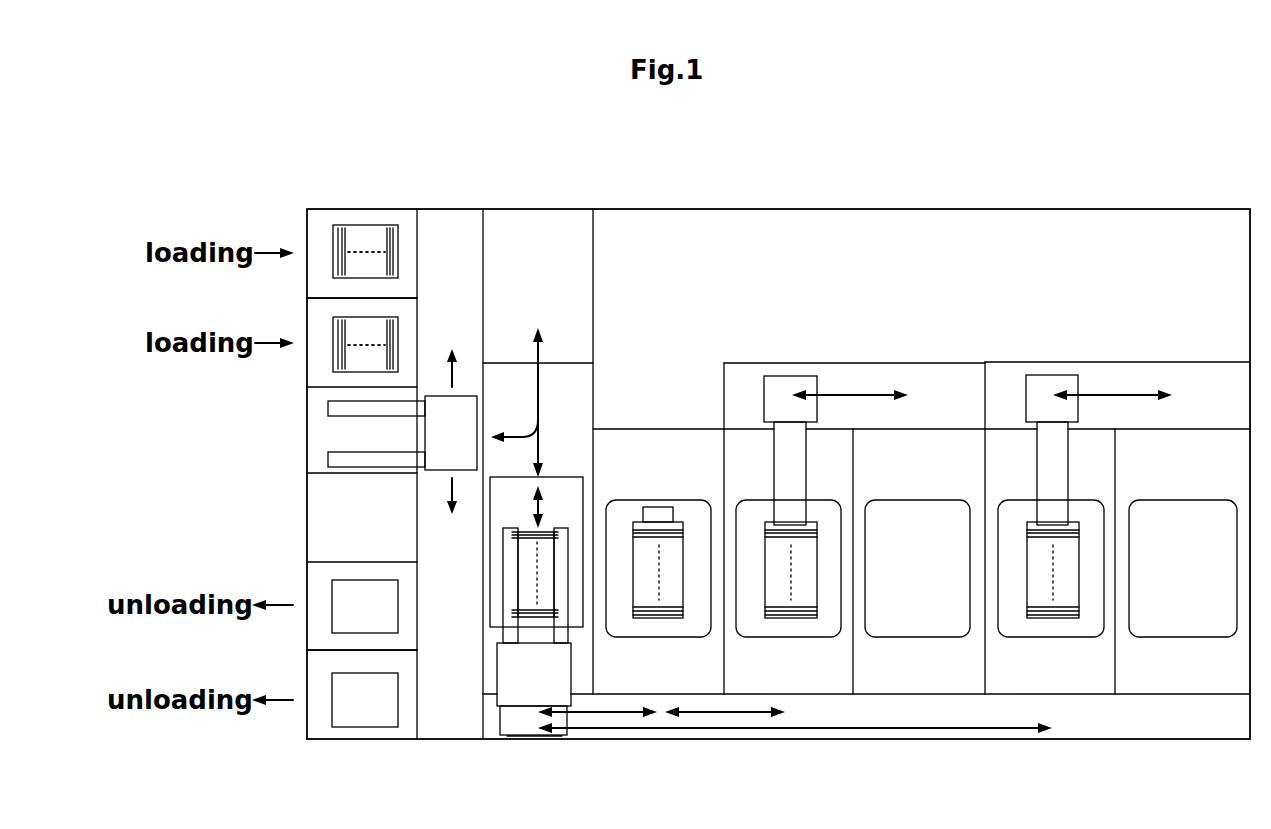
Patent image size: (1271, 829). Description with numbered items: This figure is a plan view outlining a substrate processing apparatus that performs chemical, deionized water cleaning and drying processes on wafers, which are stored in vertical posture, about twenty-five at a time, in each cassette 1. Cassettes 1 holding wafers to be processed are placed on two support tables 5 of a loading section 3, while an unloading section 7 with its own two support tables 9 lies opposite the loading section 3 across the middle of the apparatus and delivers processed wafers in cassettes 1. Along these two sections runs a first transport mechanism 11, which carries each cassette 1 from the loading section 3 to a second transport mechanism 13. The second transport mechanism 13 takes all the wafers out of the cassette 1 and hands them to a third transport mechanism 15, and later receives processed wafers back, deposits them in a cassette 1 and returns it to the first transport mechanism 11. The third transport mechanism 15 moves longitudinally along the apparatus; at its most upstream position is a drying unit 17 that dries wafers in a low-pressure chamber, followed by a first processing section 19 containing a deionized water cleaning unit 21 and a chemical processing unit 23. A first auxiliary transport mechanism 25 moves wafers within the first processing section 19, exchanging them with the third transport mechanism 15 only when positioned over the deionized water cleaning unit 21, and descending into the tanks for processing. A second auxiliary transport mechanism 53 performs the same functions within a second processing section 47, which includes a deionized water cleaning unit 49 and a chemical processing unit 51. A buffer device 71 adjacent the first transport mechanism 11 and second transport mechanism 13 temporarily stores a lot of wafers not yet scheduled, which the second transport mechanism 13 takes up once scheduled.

The cassette 1 is at (400, 268).
The loading section 3 is at (292, 368).
The support table 5 is at (313, 283).
The unloading section 7 is at (289, 747).
The support table 9 is at (312, 680).
The first transport mechanism 11 is at (392, 434).
The second transport mechanism 13 is at (562, 476).
The third transport mechanism 15 is at (553, 738).
The drying unit 17 is at (714, 462).
The first processing section 19 is at (912, 352).
The deionized water cleaning unit 21 is at (847, 462).
The chemical processing unit 23 is at (974, 462).
The first auxiliary transport mechanism 25 is at (782, 376).
The second processing section 47 is at (1160, 352).
The deionized water cleaning unit 49 is at (1109, 462).
The chemical processing unit 51 is at (1239, 462).
The second auxiliary transport mechanism 53 is at (1028, 378).
The buffer device 71 is at (553, 304).